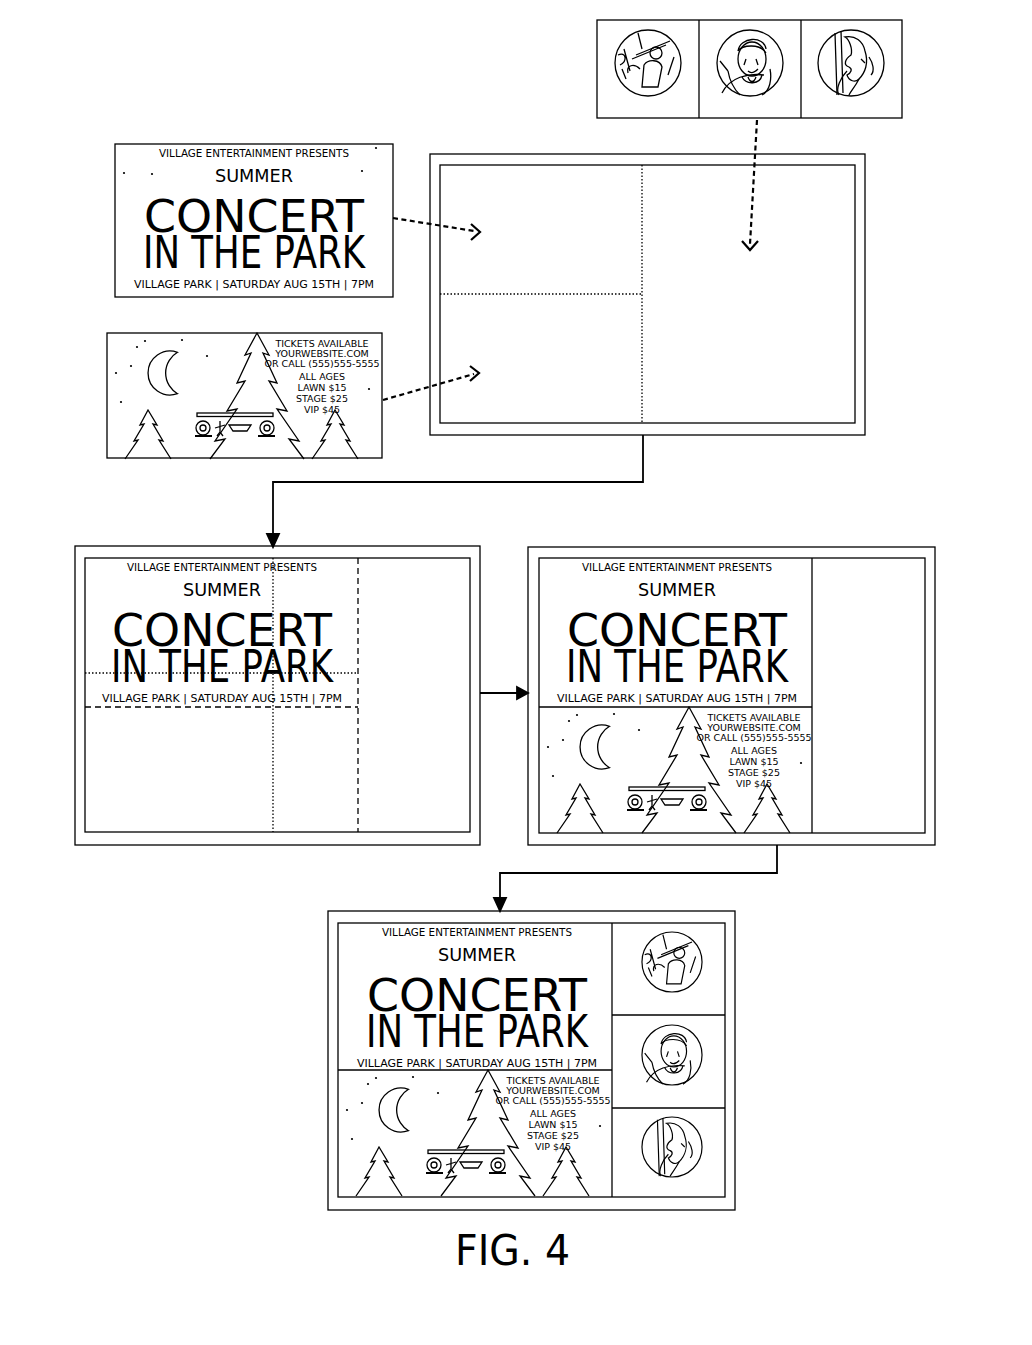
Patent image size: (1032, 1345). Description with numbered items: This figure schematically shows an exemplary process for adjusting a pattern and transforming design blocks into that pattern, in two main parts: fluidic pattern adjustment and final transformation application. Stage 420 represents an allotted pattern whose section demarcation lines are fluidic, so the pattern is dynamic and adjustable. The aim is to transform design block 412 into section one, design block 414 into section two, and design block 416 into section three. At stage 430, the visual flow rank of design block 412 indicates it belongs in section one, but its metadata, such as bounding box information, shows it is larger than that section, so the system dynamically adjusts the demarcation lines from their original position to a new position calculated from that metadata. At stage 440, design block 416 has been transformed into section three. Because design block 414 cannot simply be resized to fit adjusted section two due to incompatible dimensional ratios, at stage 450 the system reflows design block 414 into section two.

The design block 412 is at (115, 186).
The design block 414 is at (596, 42).
The design block 416 is at (107, 384).
The stage representing allotted pattern 420 is at (766, 436).
The stage of fluidic demarcation adjustment 430 is at (74, 646).
The stage of transforming design block into section 3 440 is at (888, 546).
The stage of reflowing design block into section 2 450 is at (327, 1031).